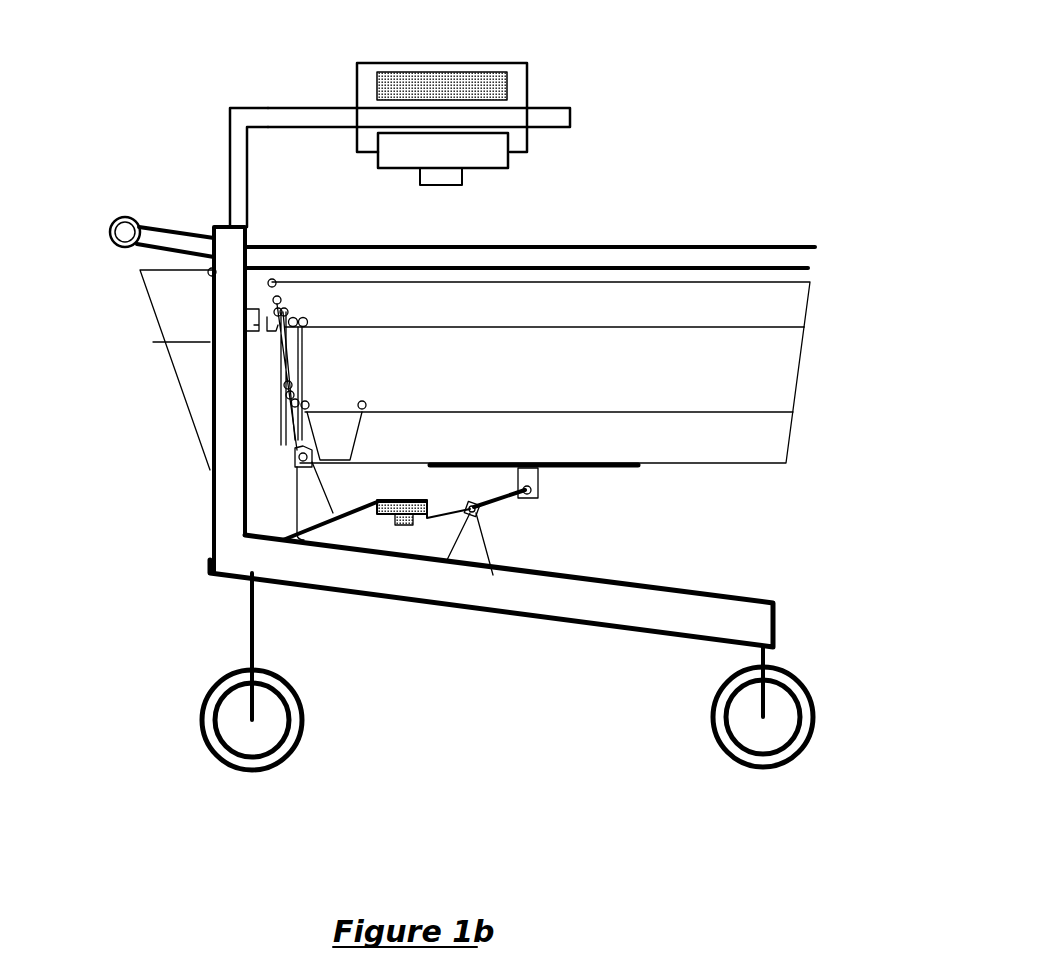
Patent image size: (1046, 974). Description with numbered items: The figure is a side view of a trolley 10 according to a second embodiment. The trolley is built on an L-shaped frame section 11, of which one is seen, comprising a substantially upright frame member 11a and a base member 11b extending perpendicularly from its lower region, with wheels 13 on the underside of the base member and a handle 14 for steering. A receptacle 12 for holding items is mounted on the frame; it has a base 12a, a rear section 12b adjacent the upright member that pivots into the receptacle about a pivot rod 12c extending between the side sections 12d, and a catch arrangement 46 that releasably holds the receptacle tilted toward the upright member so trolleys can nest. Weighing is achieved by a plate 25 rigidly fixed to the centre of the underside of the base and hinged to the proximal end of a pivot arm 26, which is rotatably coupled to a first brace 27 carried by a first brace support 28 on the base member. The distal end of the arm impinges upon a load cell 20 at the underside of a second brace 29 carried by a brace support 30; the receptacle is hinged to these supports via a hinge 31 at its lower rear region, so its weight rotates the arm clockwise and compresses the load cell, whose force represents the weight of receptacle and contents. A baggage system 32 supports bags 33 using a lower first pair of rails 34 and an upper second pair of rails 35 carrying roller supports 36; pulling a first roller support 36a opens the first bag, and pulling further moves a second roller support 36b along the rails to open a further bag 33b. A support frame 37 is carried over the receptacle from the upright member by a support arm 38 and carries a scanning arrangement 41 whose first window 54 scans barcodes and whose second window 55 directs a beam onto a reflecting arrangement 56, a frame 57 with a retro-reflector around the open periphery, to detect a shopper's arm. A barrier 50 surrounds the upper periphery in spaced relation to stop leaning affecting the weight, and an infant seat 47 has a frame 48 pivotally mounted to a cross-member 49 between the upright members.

The trolley 10 is at (683, 75).
The frame section 11 is at (441, 455).
The upright frame member 11a is at (215, 513).
The base member 11b is at (630, 617).
The receptacle 12 is at (478, 370).
The base 12a is at (719, 468).
The rear section 12b is at (273, 343).
The pivot rod 12c is at (275, 280).
The side section 12d is at (796, 300).
The wheels 13 is at (300, 743).
The handle 14 is at (121, 230).
The load cell 20 is at (392, 512).
The plate 25 is at (619, 470).
The pivot arm 26 is at (507, 505).
The first brace 27 is at (466, 513).
The first brace support 28 is at (480, 554).
The second brace 29 is at (401, 500).
The brace support 30 is at (348, 505).
The hinge 31 is at (298, 468).
The baggage system 32 is at (339, 417).
The bags 33 is at (290, 429).
The further bag 33b is at (294, 443).
The first pair of rails 34 is at (678, 406).
The second pair of rails 35 is at (645, 328).
The roller supports 36 is at (306, 321).
The first roller support 36a is at (366, 405).
The second roller support 36b is at (308, 404).
The support frame 37 is at (556, 118).
The support arm 38 is at (238, 190).
The scanning arrangement 41 is at (518, 62).
The catch arrangement 46 is at (261, 314).
The seat 47 is at (180, 341).
The seat frame 48 is at (188, 408).
The cross-member 49 is at (214, 268).
The barrier 50 is at (790, 246).
The first window 54 is at (441, 178).
The second window 55 is at (503, 160).
The reflecting arrangement 56 is at (811, 267).
The frame 57 is at (659, 266).